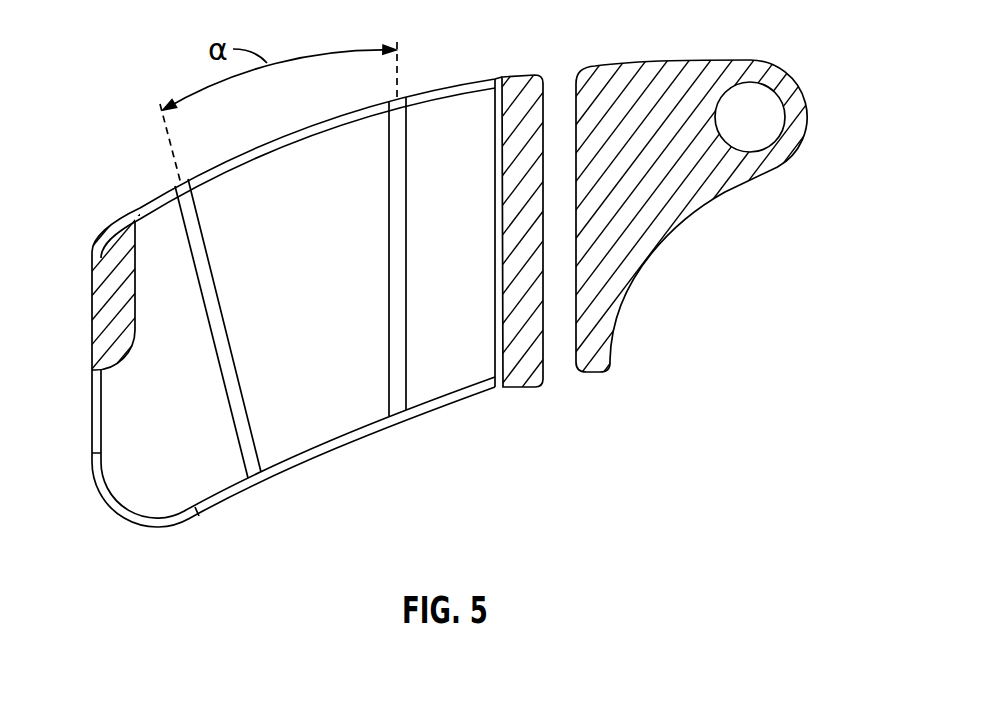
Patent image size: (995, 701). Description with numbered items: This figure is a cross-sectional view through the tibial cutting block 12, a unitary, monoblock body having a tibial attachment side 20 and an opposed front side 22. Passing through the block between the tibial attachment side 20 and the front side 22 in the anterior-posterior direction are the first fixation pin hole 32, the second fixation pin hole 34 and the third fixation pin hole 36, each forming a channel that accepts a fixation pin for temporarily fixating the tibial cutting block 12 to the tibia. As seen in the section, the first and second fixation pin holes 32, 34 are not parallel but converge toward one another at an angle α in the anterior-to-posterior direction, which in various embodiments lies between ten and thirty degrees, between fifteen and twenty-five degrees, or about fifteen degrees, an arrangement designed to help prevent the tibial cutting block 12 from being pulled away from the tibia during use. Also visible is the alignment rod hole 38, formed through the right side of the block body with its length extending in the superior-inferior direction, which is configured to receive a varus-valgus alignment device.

The tibial cutting block 12 is at (356, 460).
The tibial attachment side 20 is at (537, 390).
The front side 22 is at (520, 77).
The first fixation pin hole 32 is at (257, 463).
The second fixation pin hole 34 is at (397, 400).
The third fixation pin hole 36 is at (558, 363).
The alignment rod hole 38 is at (750, 113).